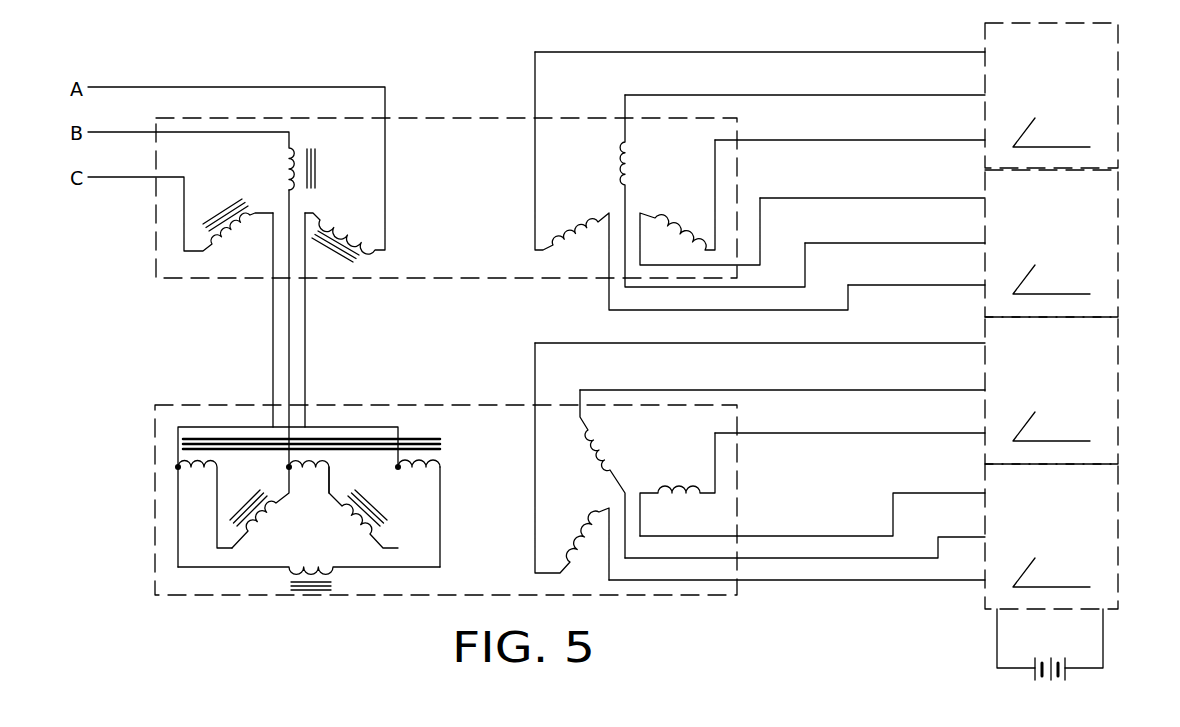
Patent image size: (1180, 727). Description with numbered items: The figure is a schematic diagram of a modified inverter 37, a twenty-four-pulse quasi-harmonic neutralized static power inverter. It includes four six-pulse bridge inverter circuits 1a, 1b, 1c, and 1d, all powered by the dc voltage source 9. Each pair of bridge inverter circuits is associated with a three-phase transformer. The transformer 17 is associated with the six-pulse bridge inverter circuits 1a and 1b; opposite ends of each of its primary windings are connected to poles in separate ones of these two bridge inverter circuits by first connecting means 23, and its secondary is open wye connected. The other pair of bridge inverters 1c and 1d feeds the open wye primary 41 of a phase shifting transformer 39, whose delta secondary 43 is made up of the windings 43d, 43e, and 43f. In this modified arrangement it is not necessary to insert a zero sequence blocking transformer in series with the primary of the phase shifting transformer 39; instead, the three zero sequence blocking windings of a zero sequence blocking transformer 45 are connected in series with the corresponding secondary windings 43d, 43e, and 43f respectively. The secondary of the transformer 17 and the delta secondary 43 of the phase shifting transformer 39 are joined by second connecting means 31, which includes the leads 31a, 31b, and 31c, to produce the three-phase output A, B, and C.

The six-pulse bridge inverter circuit 1a is at (1118, 95).
The six-pulse bridge inverter circuit 1b is at (1118, 233).
The six-pulse bridge inverter circuit 1c is at (1118, 375).
The six-pulse bridge inverter circuit 1d is at (1118, 530).
The dc voltage source 9 is at (1066, 670).
The transformer 17 is at (448, 118).
The first connecting means 23 is at (849, 309).
The second connecting means 31 is at (277, 328).
The lead 31a is at (290, 340).
The lead 31b is at (305, 366).
The lead 31c is at (273, 363).
The modified inverter 37 is at (666, 34).
The phase shifting transformer 39 is at (446, 404).
The open wye primary 41 is at (636, 489).
The delta secondary 43 is at (290, 532).
The secondary winding 43d is at (371, 525).
The secondary winding 43e is at (333, 576).
The secondary winding 43f is at (259, 523).
The zero sequence blocking transformer 45 is at (441, 445).